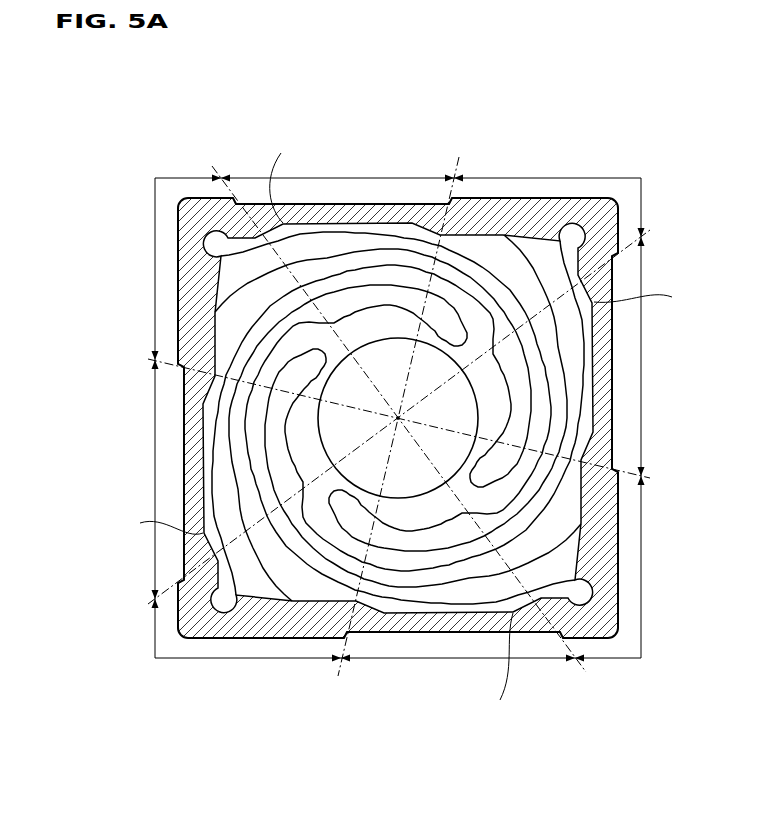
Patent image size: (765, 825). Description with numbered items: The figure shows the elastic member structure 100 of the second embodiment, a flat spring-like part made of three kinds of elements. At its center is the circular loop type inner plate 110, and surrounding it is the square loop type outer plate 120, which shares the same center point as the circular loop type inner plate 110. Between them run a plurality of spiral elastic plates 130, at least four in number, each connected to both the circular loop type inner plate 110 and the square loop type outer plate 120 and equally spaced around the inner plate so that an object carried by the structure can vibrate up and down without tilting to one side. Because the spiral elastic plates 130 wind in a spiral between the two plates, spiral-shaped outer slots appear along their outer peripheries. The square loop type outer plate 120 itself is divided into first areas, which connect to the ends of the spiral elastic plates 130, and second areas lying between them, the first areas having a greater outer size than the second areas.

The elastic member structure 100 is at (417, 110).
The circular loop type inner plate 110 is at (484, 371).
The square loop type outer plate 120 is at (608, 523).
The spiral elastic plates 130 is at (233, 278).